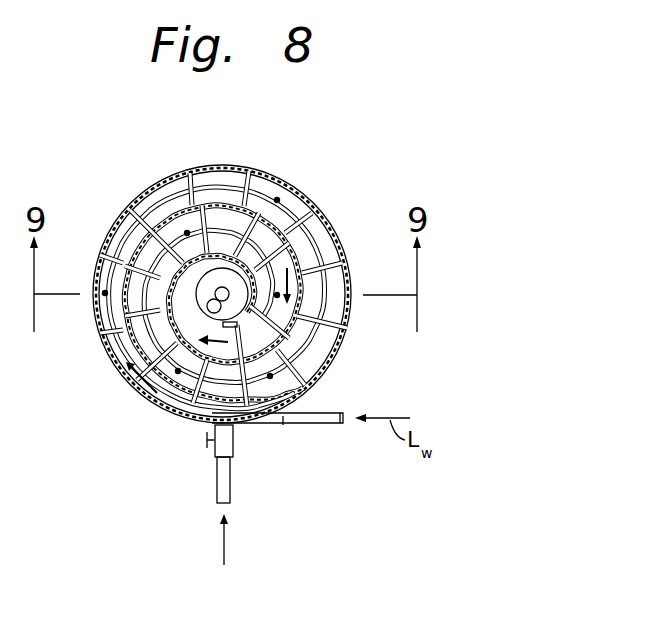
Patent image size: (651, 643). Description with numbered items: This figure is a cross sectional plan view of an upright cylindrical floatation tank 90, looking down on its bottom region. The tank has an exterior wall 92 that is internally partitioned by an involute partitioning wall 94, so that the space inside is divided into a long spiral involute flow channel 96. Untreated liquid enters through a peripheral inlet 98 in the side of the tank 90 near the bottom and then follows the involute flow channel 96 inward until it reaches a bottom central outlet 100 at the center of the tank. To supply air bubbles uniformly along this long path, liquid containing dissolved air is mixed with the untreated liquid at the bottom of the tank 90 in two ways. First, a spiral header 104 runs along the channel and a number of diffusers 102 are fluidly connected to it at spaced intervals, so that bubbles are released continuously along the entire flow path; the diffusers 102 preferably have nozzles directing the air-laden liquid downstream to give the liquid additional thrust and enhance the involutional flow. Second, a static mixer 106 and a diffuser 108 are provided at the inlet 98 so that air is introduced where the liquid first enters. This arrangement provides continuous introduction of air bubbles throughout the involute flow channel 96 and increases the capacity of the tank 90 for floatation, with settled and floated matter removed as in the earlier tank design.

The floatation tank 90 is at (283, 170).
The exterior wall 92 is at (335, 372).
The involute partitioning wall 94 is at (175, 410).
The involute flow channel 96 is at (132, 350).
The peripheral inlet 98 is at (284, 424).
The bottom central outlet 100 is at (212, 313).
The diffusers 102 is at (200, 166).
The spiral header 104 is at (162, 193).
The static mixer 106 is at (222, 443).
The diffuser 108 is at (213, 415).